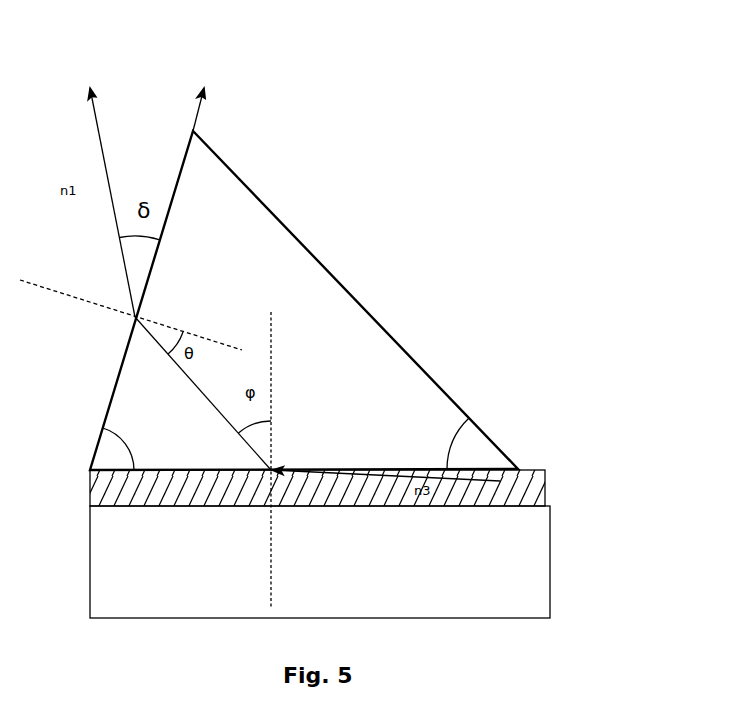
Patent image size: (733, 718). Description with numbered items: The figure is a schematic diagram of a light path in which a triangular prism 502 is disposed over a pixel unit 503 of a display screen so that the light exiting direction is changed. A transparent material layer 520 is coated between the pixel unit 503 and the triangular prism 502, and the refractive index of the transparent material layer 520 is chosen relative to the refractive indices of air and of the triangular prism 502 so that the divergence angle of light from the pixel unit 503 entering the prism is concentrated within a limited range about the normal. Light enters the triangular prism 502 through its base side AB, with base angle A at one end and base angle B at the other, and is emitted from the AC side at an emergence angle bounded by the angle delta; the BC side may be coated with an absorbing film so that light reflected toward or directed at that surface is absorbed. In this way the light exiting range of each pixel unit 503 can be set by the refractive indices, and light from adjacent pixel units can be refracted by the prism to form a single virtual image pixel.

The triangular prism 502 is at (373, 312).
The transparent material layer 520 is at (547, 483).
The pixel unit 503 is at (551, 583).